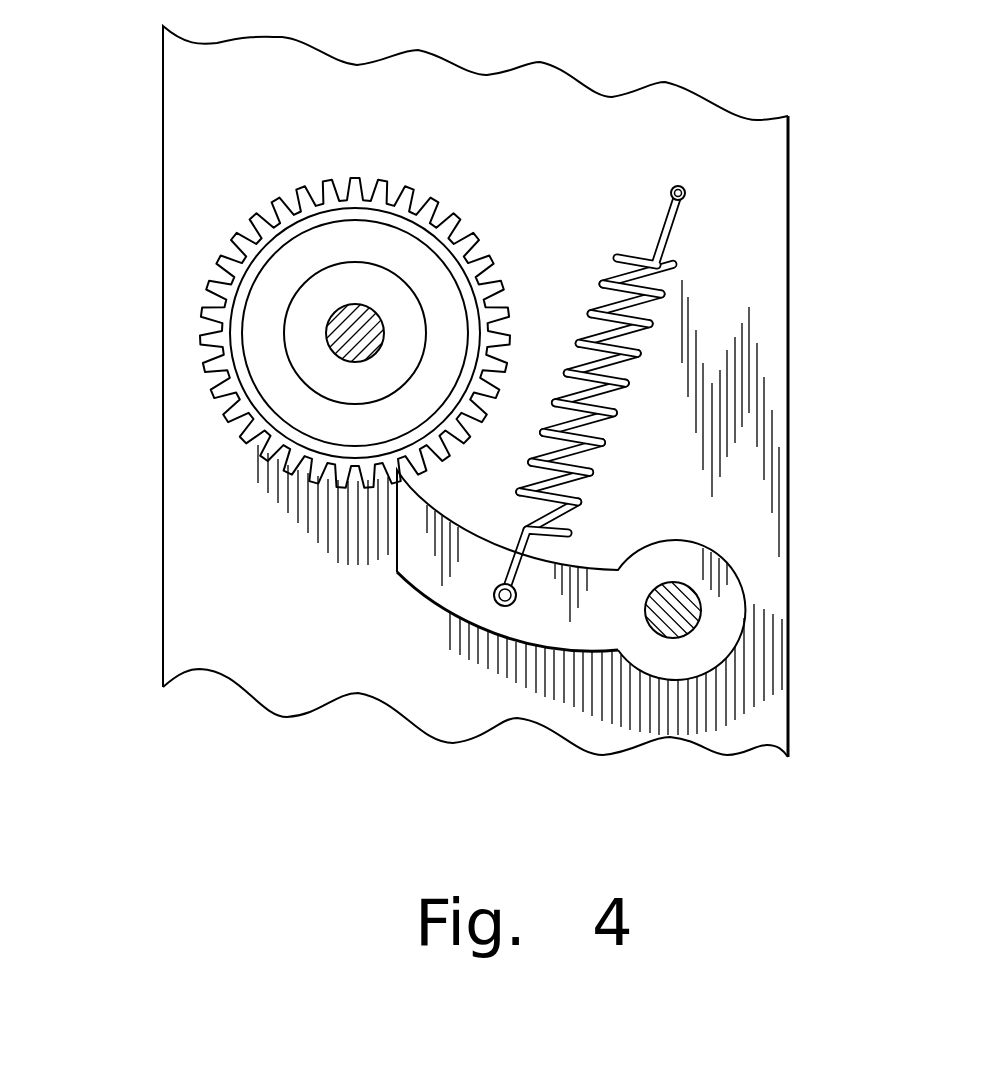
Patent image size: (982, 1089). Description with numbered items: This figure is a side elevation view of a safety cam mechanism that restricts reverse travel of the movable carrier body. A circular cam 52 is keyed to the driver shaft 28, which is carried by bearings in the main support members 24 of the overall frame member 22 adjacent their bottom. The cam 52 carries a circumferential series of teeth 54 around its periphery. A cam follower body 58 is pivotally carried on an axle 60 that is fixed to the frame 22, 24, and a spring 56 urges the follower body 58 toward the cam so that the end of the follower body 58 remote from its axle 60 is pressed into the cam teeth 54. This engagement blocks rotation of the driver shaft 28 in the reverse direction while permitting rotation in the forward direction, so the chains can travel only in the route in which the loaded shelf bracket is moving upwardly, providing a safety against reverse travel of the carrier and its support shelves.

The frame member 22 is at (405, 391).
The main support members 24 is at (202, 618).
The driver shaft 28 is at (348, 323).
The cam 52 is at (272, 368).
The teeth 54 is at (227, 423).
The spring 56 is at (647, 348).
The cam follower body 58 is at (740, 585).
The axle 60 is at (695, 618).